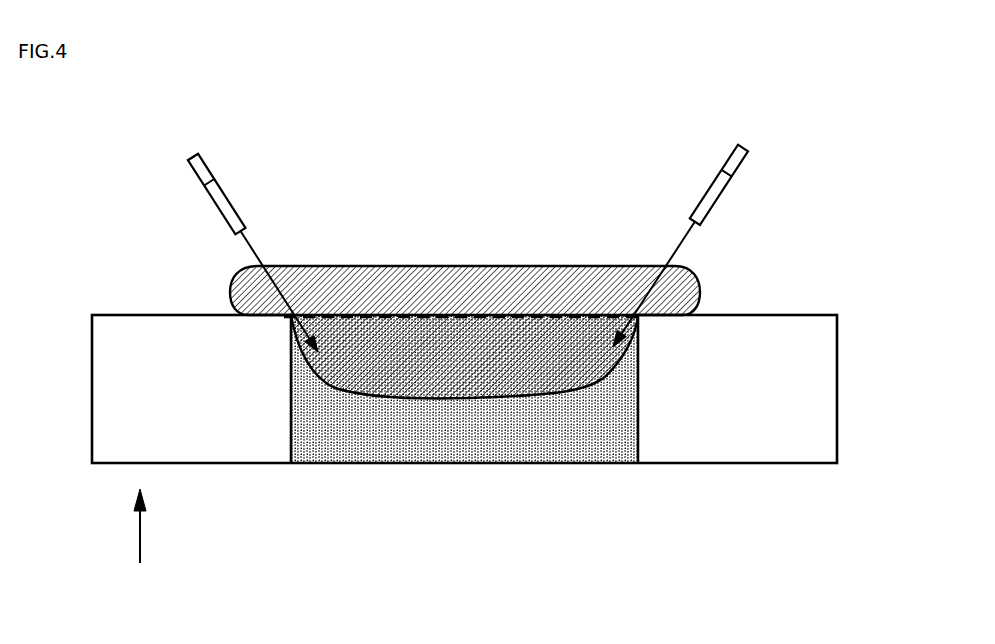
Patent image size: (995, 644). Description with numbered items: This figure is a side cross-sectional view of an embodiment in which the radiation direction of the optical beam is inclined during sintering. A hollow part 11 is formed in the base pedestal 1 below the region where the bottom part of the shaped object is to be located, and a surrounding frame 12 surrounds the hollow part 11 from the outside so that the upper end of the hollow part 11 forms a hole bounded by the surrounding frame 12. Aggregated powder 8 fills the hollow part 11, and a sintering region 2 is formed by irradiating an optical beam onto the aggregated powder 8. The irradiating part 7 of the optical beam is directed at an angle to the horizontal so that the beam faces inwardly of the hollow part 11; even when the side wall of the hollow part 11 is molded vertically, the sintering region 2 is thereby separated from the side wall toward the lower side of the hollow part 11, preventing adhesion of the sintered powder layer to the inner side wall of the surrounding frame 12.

The base pedestal 1 is at (139, 542).
The sintering region 2 is at (510, 265).
The irradiating part 7 is at (200, 175).
The aggregated powder 8 is at (590, 448).
The hollow part 11 is at (482, 432).
The surrounding frame 12 is at (762, 413).